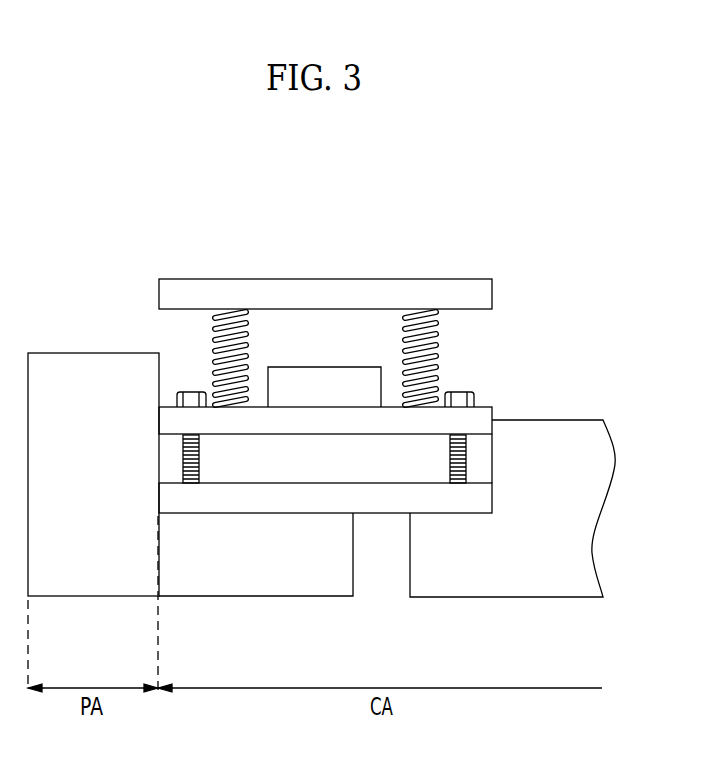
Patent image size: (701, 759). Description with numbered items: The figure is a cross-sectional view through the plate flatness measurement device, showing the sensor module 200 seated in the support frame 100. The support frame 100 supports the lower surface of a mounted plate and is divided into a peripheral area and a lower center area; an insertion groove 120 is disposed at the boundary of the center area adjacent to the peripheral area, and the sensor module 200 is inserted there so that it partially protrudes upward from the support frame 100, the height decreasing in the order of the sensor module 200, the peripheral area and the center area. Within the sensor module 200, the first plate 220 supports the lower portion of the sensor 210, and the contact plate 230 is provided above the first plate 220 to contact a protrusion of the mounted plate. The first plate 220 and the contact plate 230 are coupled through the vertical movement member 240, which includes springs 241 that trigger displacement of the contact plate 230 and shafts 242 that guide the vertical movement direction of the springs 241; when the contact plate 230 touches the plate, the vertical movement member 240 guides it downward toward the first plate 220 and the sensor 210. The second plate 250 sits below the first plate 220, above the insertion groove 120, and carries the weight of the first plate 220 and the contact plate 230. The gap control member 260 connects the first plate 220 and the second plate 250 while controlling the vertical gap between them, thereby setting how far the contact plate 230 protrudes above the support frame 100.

The support frame 100 is at (63, 352).
The insertion groove 120 is at (378, 574).
The sensor module 200 is at (302, 258).
The sensor 210 is at (356, 380).
The first plate 220 is at (315, 423).
The contact plate 230 is at (486, 293).
The vertical movement member 240 is at (411, 358).
The spring 241 is at (438, 328).
The shaft 242 is at (432, 360).
The second plate 250 is at (249, 498).
The gap control member 260 is at (192, 480).